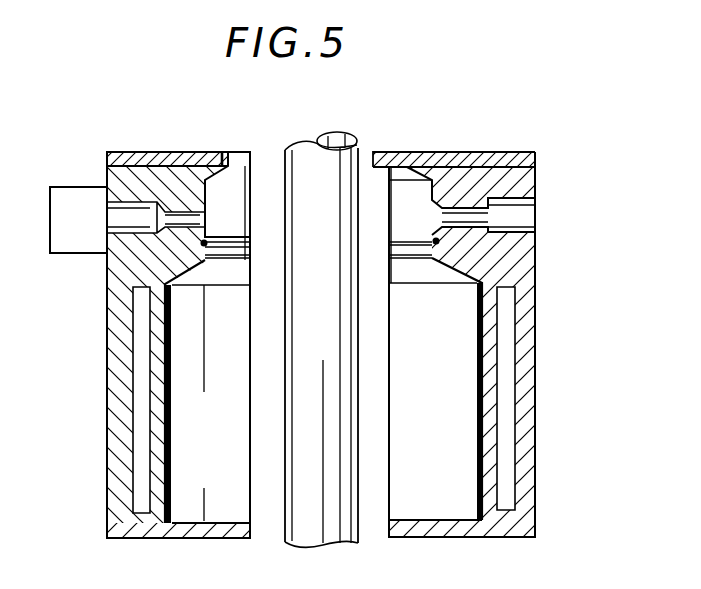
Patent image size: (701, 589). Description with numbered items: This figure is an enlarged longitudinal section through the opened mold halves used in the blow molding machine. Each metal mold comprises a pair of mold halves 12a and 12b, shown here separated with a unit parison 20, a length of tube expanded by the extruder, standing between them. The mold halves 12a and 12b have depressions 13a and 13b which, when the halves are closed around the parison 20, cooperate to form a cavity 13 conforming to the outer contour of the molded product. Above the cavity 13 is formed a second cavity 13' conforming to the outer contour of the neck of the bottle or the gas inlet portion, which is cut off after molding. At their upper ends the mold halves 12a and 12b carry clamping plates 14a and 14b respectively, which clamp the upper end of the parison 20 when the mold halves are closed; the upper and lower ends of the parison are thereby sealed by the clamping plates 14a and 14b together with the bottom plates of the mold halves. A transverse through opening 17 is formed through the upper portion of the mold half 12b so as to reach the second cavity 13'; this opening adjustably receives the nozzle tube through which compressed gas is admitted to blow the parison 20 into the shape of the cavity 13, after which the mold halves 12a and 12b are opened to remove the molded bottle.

The mold half 12a is at (525, 435).
The mold half 12b is at (120, 387).
The cavity 13 is at (462, 267).
The second cavity 13' is at (222, 176).
The depression 13a is at (480, 433).
The depression 13b is at (167, 430).
The clamping plate 14a is at (437, 150).
The clamping plate 14b is at (155, 158).
The through opening 17 is at (150, 223).
The unit parison 20 is at (333, 340).